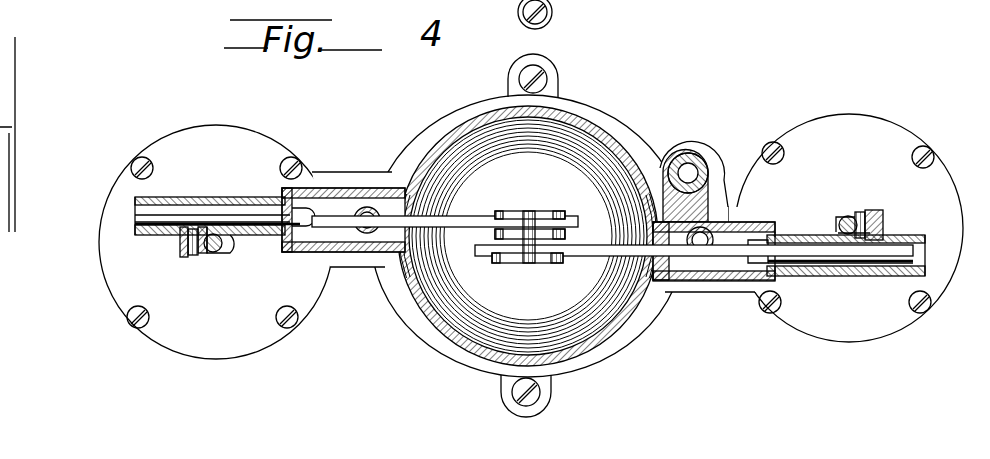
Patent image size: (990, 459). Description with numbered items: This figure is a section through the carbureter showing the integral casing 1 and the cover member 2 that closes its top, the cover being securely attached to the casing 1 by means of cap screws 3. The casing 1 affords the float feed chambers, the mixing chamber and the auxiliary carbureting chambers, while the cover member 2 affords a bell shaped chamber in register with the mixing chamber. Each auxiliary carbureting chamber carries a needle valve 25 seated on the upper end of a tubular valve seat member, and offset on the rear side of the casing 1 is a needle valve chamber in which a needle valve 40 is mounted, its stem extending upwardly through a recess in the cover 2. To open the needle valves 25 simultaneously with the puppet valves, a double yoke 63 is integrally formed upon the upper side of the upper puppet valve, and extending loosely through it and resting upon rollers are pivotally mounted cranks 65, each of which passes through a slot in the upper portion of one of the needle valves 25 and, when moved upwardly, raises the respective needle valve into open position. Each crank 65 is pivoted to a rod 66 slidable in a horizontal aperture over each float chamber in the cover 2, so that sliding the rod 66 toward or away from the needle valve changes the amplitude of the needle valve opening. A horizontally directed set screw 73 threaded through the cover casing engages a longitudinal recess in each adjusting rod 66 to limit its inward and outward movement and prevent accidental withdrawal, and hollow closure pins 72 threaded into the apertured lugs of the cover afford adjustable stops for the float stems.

The casing 1 is at (631, 151).
The cover member 2 is at (233, 345).
The cap screws 3 is at (553, 12).
The needle valve 25 is at (369, 206).
The needle valve 40 is at (690, 164).
The double yoke 63 is at (547, 262).
The cranks 65 is at (467, 217).
The rod 66 is at (201, 215).
The hollow closure pins 72 is at (213, 253).
The set screw 73 is at (186, 254).